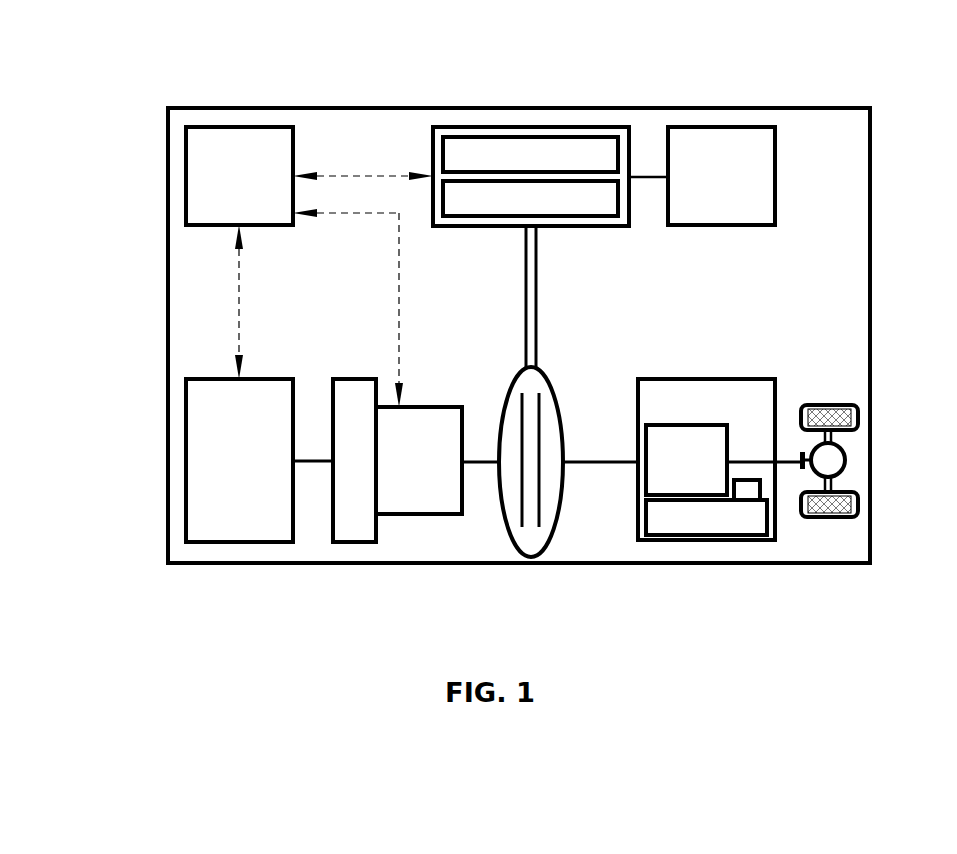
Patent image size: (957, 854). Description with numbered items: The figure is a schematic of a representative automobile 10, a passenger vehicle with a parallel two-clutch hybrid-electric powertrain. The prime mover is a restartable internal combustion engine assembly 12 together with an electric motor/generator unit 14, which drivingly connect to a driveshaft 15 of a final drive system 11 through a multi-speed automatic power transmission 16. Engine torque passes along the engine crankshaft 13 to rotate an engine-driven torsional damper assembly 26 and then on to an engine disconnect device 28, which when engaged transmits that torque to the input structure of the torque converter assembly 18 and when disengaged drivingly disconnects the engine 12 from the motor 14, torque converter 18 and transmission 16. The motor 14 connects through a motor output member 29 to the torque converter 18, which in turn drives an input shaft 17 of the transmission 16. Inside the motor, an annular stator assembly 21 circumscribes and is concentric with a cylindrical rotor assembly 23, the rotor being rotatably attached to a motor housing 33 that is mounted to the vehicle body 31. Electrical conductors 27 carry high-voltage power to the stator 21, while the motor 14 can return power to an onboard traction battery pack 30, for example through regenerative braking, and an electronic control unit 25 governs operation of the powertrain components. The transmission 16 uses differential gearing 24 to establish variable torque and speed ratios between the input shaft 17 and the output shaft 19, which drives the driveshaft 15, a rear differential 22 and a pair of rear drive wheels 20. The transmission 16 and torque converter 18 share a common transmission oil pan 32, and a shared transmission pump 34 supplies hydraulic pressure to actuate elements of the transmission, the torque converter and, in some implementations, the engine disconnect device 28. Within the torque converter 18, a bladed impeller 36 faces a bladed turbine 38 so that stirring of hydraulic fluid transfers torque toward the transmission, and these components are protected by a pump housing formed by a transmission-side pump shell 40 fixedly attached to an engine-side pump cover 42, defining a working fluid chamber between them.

The automobile 10 is at (150, 86).
The final drive system 11 is at (855, 280).
The internal combustion engine assembly 12 is at (198, 379).
The engine crankshaft 13 is at (310, 457).
The electric motor/generator unit 14 is at (449, 127).
The driveshaft 15 is at (793, 460).
The multi-speed automatic power transmission 16 is at (652, 379).
The transmission input shaft 17 is at (595, 460).
The torque converter assembly 18 is at (563, 520).
The transmission output shaft 19 is at (744, 462).
The rear drive wheels 20 is at (826, 405).
The stator assembly 21 is at (443, 141).
The rear differential 22 is at (847, 458).
The rotor assembly 23 is at (443, 190).
The differential gearing 24 is at (687, 425).
The electronic control unit 25 is at (198, 127).
The torsional damper assembly 26 is at (368, 379).
The electrical conductors/cables 27 is at (637, 173).
The engine disconnect device 28 is at (430, 407).
The motor output member 29 is at (526, 254).
The traction battery pack 30 is at (695, 127).
The vehicle body 31 is at (330, 108).
The transmission oil pan 32 is at (683, 518).
The motor housing 33 is at (575, 226).
The transmission pump 34 is at (745, 490).
The impeller 36 is at (522, 527).
The turbine 38 is at (539, 527).
The pump shell 40 is at (563, 490).
The pump cover 42 is at (505, 520).